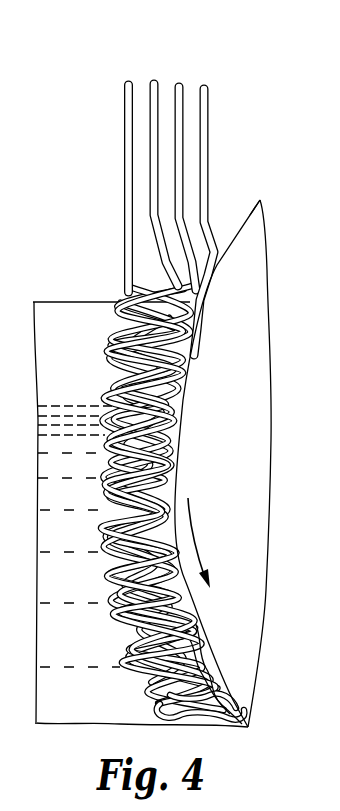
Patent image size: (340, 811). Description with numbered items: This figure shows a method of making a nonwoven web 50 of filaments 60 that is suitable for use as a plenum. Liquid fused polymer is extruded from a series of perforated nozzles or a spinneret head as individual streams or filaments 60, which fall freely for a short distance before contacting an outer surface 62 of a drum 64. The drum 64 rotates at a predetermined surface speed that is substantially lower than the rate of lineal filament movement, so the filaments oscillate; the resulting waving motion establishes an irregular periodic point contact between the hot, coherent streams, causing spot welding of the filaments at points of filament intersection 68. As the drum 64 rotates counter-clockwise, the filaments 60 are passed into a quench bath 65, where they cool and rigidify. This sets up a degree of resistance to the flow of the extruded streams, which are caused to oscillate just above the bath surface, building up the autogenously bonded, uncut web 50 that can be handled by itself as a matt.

The nonwoven web 50 is at (126, 682).
The filaments 60 is at (150, 100).
The outer surface 62 is at (244, 223).
The drum 64 is at (253, 323).
The quench bath 65 is at (95, 647).
The points of filament intersection 68 is at (264, 558).